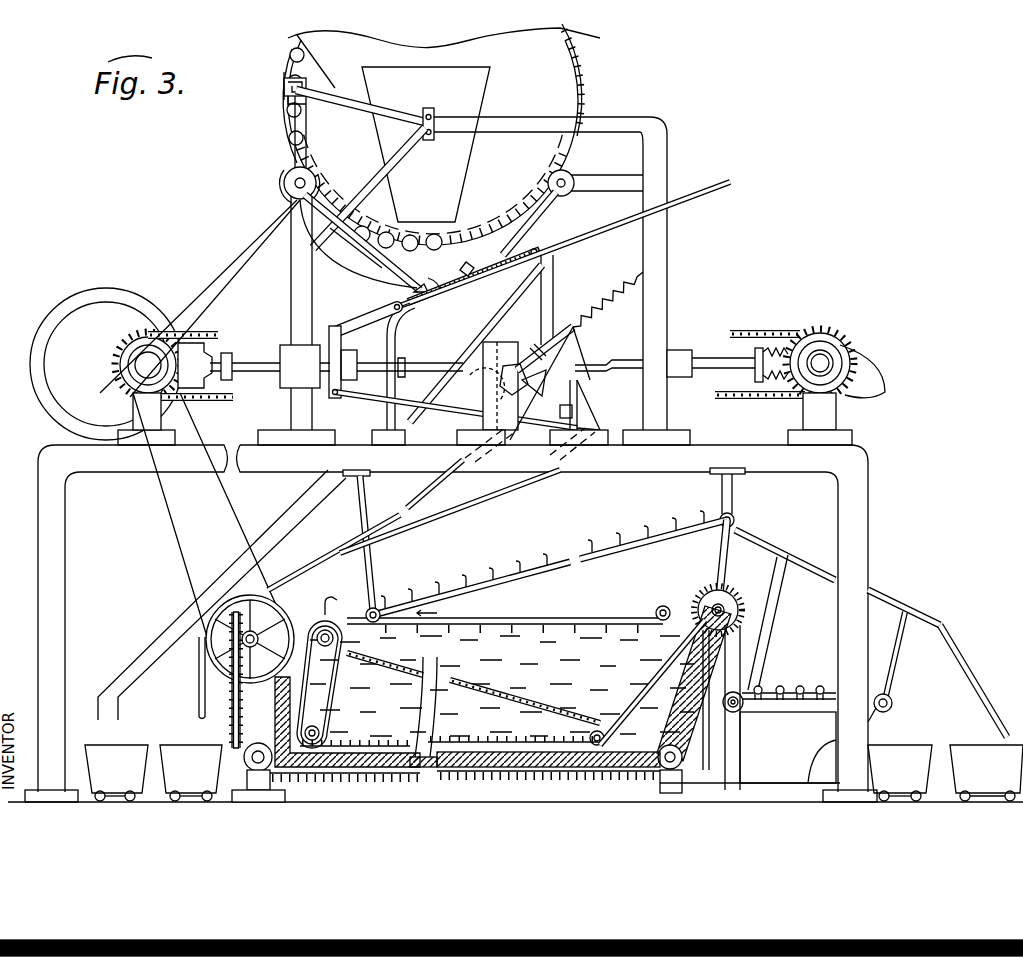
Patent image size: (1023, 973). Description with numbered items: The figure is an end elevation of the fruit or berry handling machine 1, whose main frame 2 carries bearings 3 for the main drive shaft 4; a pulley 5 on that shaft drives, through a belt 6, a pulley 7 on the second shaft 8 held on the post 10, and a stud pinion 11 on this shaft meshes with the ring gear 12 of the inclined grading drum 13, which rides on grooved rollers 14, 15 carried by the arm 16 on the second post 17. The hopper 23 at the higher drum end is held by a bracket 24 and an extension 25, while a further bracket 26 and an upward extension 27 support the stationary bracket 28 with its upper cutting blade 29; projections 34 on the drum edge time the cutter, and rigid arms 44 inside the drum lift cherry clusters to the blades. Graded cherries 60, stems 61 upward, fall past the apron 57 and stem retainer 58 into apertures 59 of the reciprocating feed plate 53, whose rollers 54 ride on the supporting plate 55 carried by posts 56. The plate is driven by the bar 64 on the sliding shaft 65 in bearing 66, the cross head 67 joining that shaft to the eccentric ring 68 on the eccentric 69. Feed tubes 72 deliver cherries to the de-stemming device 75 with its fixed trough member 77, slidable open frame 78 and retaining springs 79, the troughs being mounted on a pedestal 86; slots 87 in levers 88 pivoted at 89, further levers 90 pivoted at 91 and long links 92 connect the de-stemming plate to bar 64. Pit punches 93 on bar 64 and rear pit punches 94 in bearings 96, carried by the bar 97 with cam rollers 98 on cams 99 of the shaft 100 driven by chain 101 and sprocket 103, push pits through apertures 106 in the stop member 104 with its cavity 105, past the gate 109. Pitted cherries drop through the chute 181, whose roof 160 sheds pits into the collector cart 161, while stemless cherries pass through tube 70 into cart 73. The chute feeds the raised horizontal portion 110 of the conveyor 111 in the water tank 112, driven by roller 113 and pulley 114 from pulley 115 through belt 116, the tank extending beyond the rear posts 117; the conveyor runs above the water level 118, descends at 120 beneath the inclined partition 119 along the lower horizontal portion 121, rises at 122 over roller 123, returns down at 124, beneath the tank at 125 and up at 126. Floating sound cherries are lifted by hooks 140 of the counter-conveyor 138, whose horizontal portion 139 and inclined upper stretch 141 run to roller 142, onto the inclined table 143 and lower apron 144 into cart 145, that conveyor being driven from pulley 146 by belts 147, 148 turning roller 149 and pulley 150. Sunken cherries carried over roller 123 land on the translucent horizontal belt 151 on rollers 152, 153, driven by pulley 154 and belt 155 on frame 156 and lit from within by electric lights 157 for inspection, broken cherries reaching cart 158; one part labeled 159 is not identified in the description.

The fruit or berry handling machine 1 is at (212, 270).
The main frame 2 is at (900, 500).
The bearings 3 is at (840, 438).
The main drive shaft 4 is at (146, 370).
The pulley 5 is at (130, 350).
The belt 6 is at (246, 242).
The pulley 7 is at (284, 195).
The second shaft 8 is at (286, 182).
The post 10 is at (298, 270).
The stud pinion 11 is at (306, 218).
The ring gear 12 is at (287, 92).
The grading drum 13 is at (272, 82).
The grooved roller 14 is at (290, 184).
The grooved roller 15 is at (580, 178).
The arm 16 is at (645, 170).
The second post 17 is at (668, 270).
The hopper 23 is at (468, 168).
The bracket 24 is at (320, 262).
The extension 25 is at (635, 117).
The further bracket 26 is at (385, 112).
The upward extension 27 is at (307, 128).
The stationary bracket 28 is at (308, 86).
The upper cutting blade 29 is at (305, 62).
The projections 34 is at (290, 58).
The rigid arms 44 is at (578, 90).
The slidable reciprocating feed plate 53 is at (510, 262).
The rollers 54 is at (420, 300).
The supporting plate 55 is at (485, 290).
The posts 56 is at (384, 413).
The apron 57 is at (380, 266).
The stem retainer 58 is at (562, 214).
The apertures 59 is at (440, 286).
The cherries 60 is at (420, 262).
The stems 61 is at (434, 280).
The bar 64 is at (348, 362).
The sliding shaft 65 is at (262, 372).
The bearing 66 is at (282, 348).
The cross head 67 is at (228, 354).
The eccentric ring 68 is at (116, 290).
The eccentric 69 is at (76, 302).
The tube 70 is at (150, 650).
The feed tubes 72 is at (556, 268).
The collector cart 73 is at (118, 752).
The de-stemming device 75 is at (572, 305).
The fixed trough member 77 is at (572, 352).
The slidable open frame 78 is at (578, 332).
The retaining springs 79 is at (612, 300).
The pedestal 86 is at (590, 430).
The slots 87 is at (532, 346).
The levers 88 is at (522, 428).
The pivot 89 is at (560, 412).
The further levers 90 is at (580, 406).
The pivot 91 is at (580, 390).
The long links 92 is at (448, 424).
The pit punches 93 is at (400, 362).
The pit punches 94 is at (614, 362).
The bearings 96 is at (680, 352).
The bar 97 is at (755, 375).
The cam rollers 98 is at (790, 350).
The cams 99 is at (878, 388).
The shaft 100 is at (822, 362).
The chain 101 is at (748, 332).
The sprocket 103 is at (800, 340).
The stop member 104 is at (445, 480).
The cavity 105 is at (496, 392).
The apertures 106 is at (495, 376).
The gate 109 is at (526, 386).
The raised horizontal portion 110 is at (305, 612).
The conveyor 111 is at (216, 722).
The water tank 112 is at (462, 772).
The roller 113 is at (298, 702).
The pulley 114 is at (232, 648).
The pulley 115 is at (132, 362).
The belt 116 is at (170, 524).
The rear posts 117 is at (868, 572).
The water level 118 is at (366, 612).
The inclined partition 119 is at (515, 700).
The downwardly extending portion 120 is at (258, 726).
The lower horizontal portion 121 is at (365, 774).
The upwardly inclined portion 122 is at (612, 745).
The roller 123 is at (740, 600).
The descending portion 124 is at (706, 748).
The portion beneath tank 125 is at (520, 768).
The rising portion 126 is at (230, 692).
The counter-conveyor 138 is at (485, 568).
The horizontal portion 139 is at (455, 640).
The hooks 140 is at (428, 584).
The inclined upper stretch 141 is at (592, 545).
The roller 142 is at (735, 516).
The inclined table 143 is at (900, 606).
The lower apron 144 is at (982, 676).
The cart 145 is at (986, 773).
The pulley 146 is at (745, 622).
The belt 147 is at (686, 598).
The belt 148 is at (735, 565).
The roller 149 is at (658, 608).
The pulley 150 is at (745, 530).
The horizontal belt 151 is at (768, 690).
The roller 152 is at (742, 720).
The roller 153 is at (893, 706).
The pulley 154 is at (745, 712).
The belt 155 is at (770, 658).
The frame 156 is at (742, 766).
The electric lights 157 is at (805, 688).
The cart 158 is at (900, 773).
The rod 159 is at (790, 384).
The roof 160 is at (314, 560).
The collector cart 161 is at (191, 773).
The chute 181 is at (510, 492).